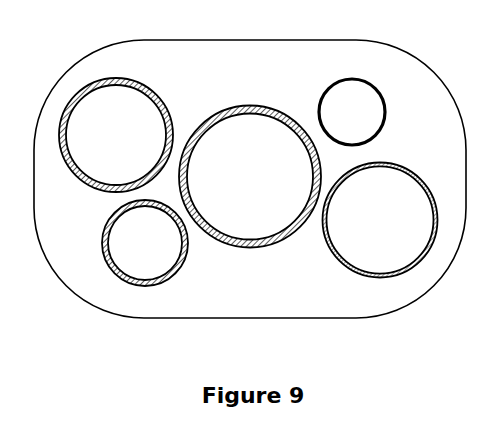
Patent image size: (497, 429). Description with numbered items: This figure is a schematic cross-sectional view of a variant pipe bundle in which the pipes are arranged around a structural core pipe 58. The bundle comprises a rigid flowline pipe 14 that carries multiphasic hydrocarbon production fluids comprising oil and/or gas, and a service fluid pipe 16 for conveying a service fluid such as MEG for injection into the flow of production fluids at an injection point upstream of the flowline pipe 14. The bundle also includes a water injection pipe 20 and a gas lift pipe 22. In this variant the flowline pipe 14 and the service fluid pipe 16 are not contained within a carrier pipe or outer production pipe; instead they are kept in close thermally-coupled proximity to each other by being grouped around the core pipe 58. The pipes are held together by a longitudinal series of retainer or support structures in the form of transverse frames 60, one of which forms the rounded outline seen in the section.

The transverse frame 60 is at (398, 67).
The rigid flowline pipe 14 is at (153, 92).
The structural core pipe 58 is at (263, 107).
The gas lift pipe 22 is at (384, 115).
The service fluid pipe 16 is at (103, 235).
The water injection pipe 20 is at (332, 252).